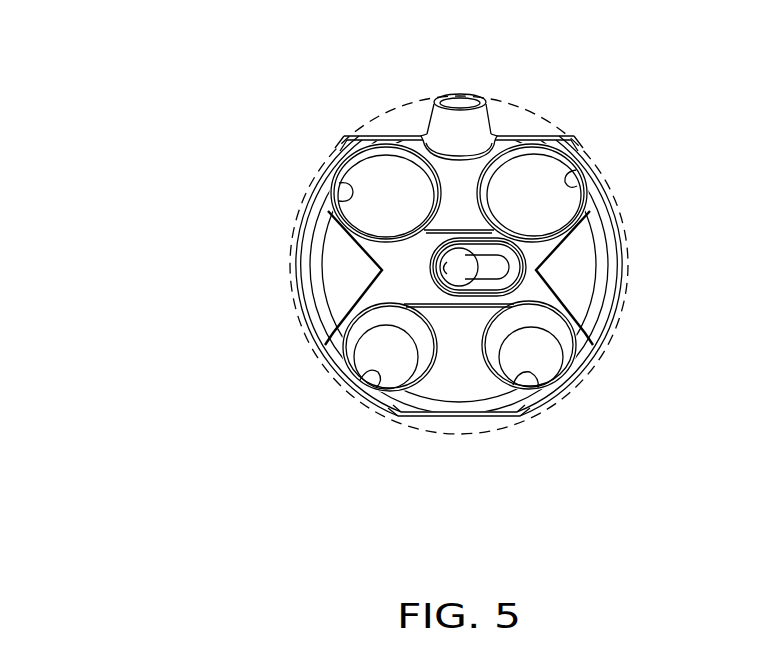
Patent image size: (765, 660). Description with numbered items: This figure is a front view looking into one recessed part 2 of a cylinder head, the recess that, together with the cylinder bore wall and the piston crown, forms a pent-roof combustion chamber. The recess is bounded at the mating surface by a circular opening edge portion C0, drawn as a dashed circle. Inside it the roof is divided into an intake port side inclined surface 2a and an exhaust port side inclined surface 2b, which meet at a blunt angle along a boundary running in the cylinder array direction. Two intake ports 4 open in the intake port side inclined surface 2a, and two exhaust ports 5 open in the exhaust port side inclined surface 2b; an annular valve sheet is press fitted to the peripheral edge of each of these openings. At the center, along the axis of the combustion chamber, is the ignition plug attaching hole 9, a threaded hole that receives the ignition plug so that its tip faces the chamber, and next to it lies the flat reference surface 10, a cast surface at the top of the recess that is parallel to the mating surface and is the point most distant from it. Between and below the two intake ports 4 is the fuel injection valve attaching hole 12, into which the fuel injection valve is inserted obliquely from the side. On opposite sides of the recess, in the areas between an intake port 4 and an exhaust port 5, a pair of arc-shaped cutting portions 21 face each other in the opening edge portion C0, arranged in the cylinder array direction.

The circular opening edge portion C0 is at (362, 128).
The recessed part 2 is at (576, 277).
The intake port side inclined surface 2a is at (421, 138).
The exhaust port side inclined surface 2b is at (458, 388).
The intake port 4 is at (350, 188).
The exhaust port 5 is at (357, 365).
The ignition plug attaching hole 9 is at (438, 275).
The flat reference surface 10 is at (499, 273).
The fuel injection valve attaching hole 12 is at (462, 107).
The cutting portion 21 is at (298, 290).